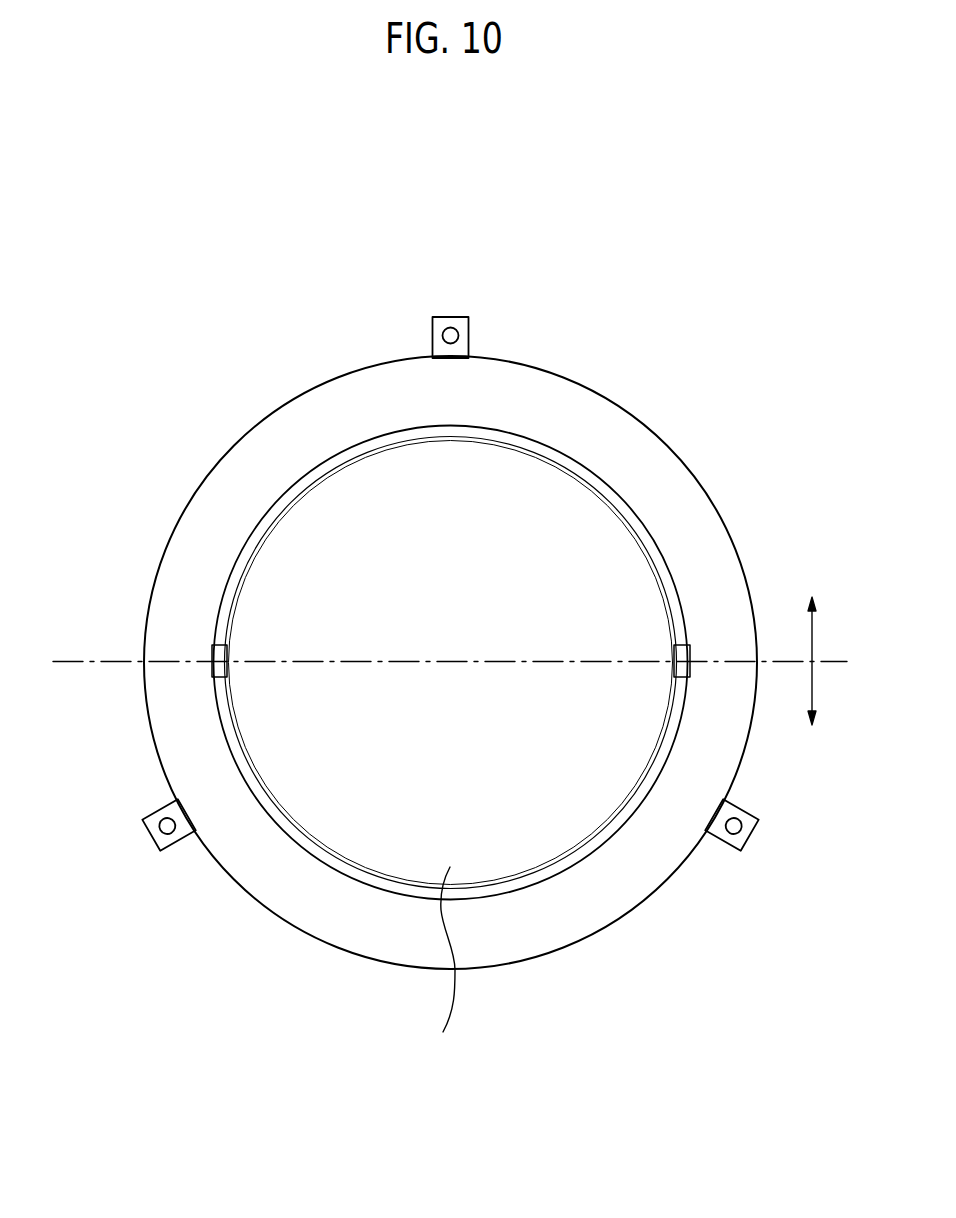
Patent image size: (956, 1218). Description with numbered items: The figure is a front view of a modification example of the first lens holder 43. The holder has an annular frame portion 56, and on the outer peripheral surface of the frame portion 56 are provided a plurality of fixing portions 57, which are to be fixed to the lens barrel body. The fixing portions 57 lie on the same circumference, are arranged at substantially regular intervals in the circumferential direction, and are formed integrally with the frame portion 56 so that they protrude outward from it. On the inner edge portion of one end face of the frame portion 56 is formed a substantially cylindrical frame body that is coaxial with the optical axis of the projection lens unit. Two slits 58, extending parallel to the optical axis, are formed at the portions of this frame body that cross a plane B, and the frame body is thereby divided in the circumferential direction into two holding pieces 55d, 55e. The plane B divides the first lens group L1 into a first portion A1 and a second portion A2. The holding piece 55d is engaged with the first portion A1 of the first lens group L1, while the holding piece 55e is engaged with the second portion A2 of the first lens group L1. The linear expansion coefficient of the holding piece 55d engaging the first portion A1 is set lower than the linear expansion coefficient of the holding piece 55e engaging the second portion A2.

The first lens holder 43 is at (452, 638).
The frame portion 56 is at (650, 425).
The fixing portion 57 is at (433, 332).
The slit 58 is at (212, 660).
The holding piece 55e is at (490, 428).
The holding piece 55d is at (600, 853).
The plane B is at (83, 660).
The first portion A1 is at (811, 680).
The second portion A2 is at (811, 587).
The first lens group L1 is at (440, 970).